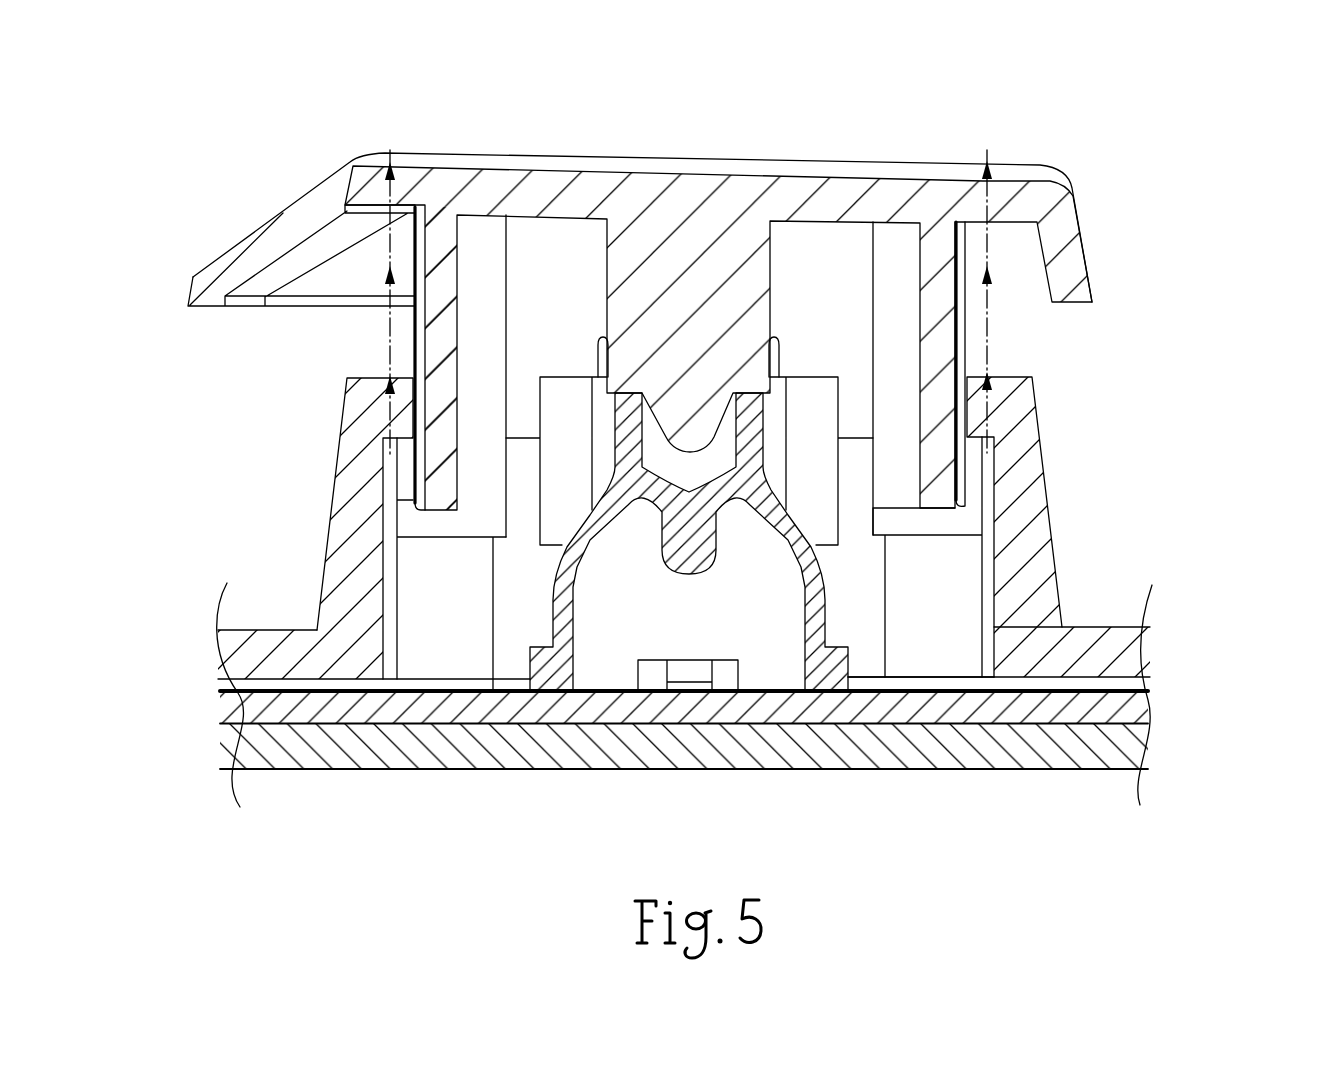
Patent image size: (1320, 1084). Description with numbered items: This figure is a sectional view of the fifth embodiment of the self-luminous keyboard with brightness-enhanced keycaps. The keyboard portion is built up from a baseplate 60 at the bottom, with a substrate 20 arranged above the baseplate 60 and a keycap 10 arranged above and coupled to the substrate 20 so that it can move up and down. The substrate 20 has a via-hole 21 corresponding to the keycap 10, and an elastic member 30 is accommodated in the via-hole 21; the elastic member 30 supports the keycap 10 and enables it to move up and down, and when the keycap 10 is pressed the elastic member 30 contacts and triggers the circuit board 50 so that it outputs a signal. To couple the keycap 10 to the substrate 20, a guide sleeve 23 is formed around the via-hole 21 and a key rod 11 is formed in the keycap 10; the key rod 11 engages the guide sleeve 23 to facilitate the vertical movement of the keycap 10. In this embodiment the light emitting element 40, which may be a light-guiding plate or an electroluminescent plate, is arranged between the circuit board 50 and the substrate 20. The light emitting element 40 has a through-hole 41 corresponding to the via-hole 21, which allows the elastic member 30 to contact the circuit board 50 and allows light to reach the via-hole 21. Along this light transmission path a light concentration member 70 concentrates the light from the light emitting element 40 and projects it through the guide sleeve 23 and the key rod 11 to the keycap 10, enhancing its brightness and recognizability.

The keycap 10 is at (436, 160).
The key rod 11 is at (440, 396).
The substrate 20 is at (262, 657).
The via-hole 21 is at (855, 643).
The guide sleeve 23 is at (348, 565).
The elastic member 30 is at (557, 670).
The light emitting element 40 is at (988, 685).
The through-hole 41 is at (512, 683).
The circuit board 50 is at (1113, 707).
The baseplate 60 is at (1087, 769).
The light concentration member 70 is at (988, 572).